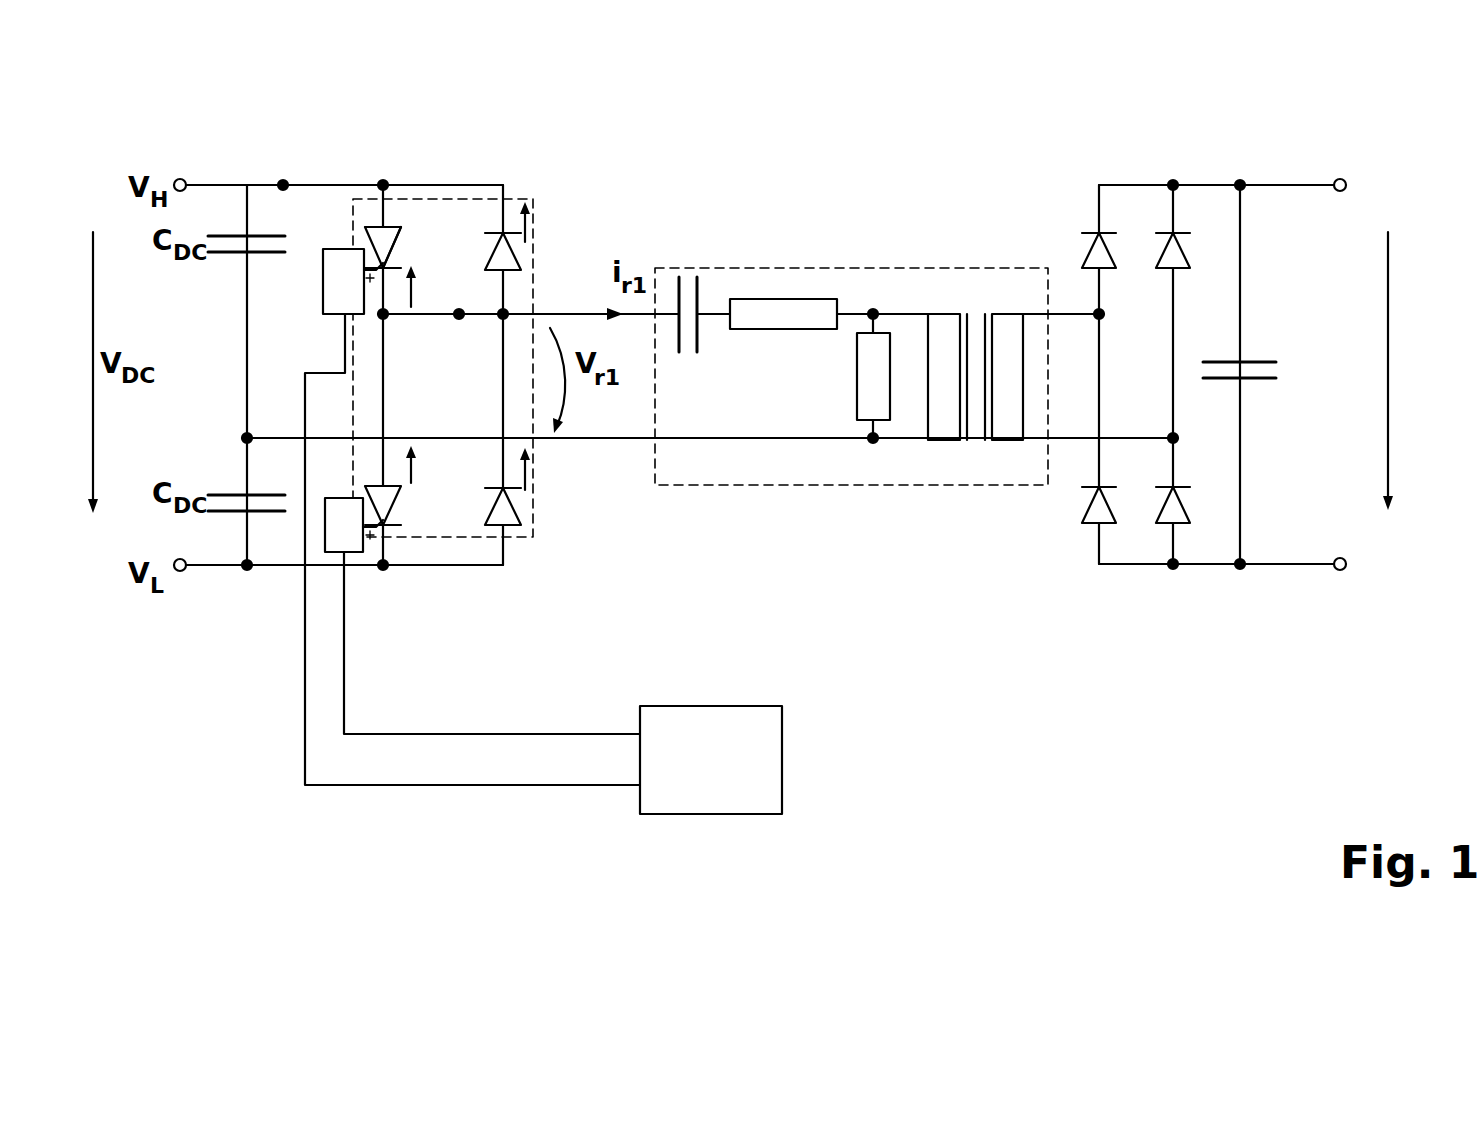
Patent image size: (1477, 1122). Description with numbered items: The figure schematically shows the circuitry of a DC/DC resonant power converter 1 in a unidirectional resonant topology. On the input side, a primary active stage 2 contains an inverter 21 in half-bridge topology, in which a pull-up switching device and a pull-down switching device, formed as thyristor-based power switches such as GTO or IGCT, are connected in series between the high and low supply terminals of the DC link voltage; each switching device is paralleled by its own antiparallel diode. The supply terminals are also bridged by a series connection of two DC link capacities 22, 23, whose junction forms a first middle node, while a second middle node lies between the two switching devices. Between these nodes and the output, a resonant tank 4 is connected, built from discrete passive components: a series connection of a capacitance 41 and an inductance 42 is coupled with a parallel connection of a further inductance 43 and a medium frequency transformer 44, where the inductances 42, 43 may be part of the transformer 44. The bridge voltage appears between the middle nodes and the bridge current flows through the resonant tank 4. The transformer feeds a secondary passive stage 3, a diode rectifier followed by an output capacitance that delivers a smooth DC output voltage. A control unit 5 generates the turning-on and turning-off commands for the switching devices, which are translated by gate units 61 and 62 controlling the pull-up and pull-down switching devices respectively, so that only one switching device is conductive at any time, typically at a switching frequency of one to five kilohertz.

The DC/DC resonant power converter 1 is at (864, 120).
The primary active stage 2 is at (433, 620).
The inverter 21 is at (518, 199).
The DC link capacity 22 is at (220, 254).
The DC link capacity 23 is at (226, 494).
The secondary passive stage 3 is at (1179, 622).
The resonant tank 4 is at (884, 576).
The capacitance 41 is at (722, 268).
The inductance 42 is at (780, 299).
The further inductance 43 is at (857, 400).
The medium frequency transformer 44 is at (975, 425).
The control unit 5 is at (782, 760).
The gate unit 61 is at (330, 249).
The gate unit 62 is at (336, 498).